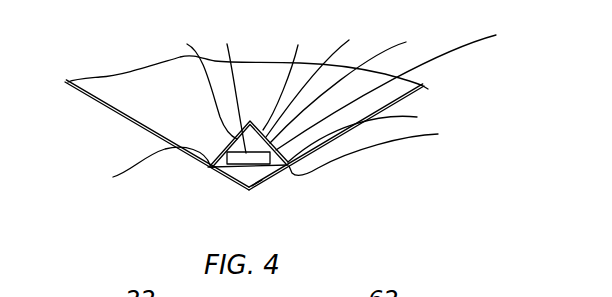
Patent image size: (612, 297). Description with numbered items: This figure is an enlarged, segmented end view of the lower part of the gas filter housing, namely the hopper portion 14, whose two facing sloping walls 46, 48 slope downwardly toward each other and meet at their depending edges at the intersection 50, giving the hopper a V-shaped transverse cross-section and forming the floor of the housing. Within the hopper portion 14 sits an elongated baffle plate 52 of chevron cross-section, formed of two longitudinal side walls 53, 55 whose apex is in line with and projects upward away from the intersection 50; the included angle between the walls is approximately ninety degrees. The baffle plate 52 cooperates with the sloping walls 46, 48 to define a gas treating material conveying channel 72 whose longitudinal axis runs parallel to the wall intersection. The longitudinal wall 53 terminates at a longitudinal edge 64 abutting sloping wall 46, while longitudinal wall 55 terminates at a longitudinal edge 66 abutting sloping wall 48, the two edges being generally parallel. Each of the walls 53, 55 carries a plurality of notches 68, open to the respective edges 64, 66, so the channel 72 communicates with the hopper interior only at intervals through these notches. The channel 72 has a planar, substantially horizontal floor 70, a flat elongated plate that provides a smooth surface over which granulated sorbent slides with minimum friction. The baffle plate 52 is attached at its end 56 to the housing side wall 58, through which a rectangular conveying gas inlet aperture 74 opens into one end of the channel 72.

The hopper portion 14 is at (130, 189).
The sloping wall 46 is at (112, 111).
The sloping wall 48 is at (418, 95).
The intersection 50 is at (247, 192).
The baffle plate 52 is at (258, 105).
The longitudinal side wall 53 is at (199, 80).
The conveying gas inlet aperture 74 is at (227, 86).
The gas treating material conveying channel 72 is at (293, 73).
The side wall 58 is at (325, 76).
The end of baffle plate 56 is at (352, 83).
The longitudinal side wall 55 is at (402, 84).
The notches 68 is at (266, 142).
The longitudinal edge 66 is at (386, 150).
The longitudinal edge 64 is at (208, 167).
The planar floor 70 is at (260, 182).